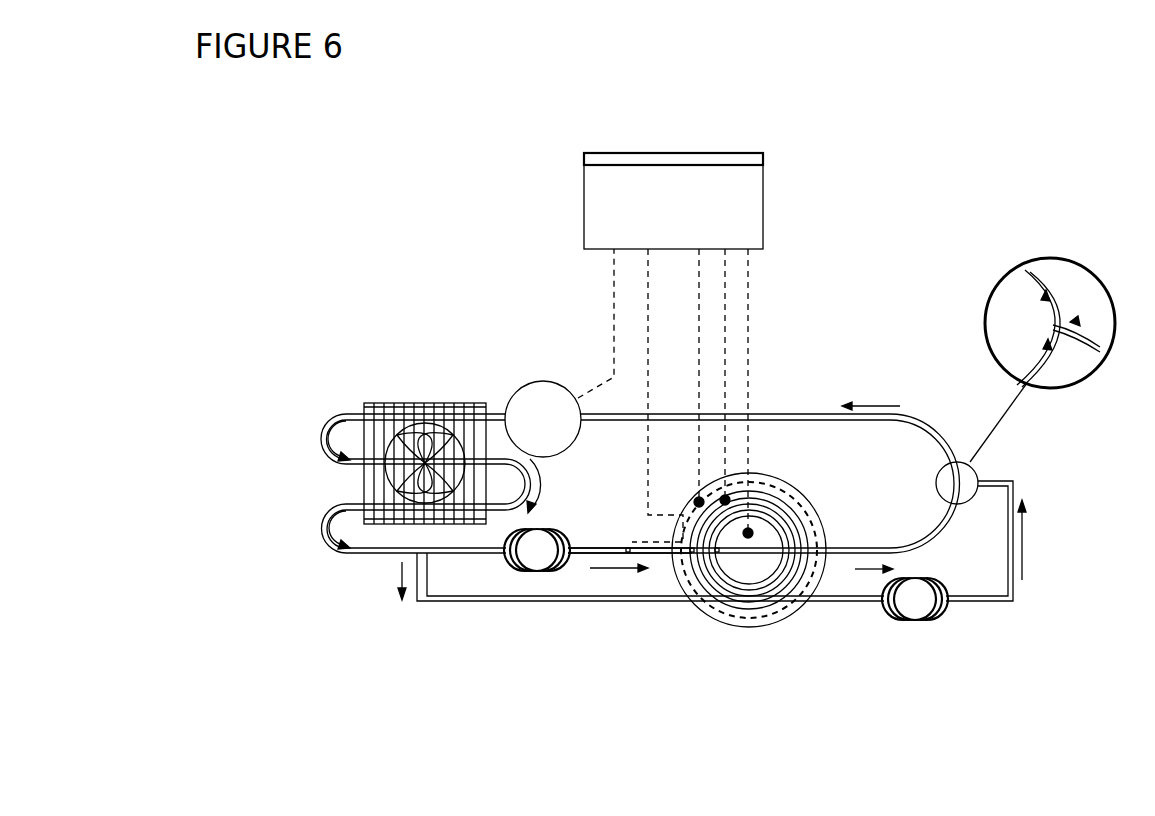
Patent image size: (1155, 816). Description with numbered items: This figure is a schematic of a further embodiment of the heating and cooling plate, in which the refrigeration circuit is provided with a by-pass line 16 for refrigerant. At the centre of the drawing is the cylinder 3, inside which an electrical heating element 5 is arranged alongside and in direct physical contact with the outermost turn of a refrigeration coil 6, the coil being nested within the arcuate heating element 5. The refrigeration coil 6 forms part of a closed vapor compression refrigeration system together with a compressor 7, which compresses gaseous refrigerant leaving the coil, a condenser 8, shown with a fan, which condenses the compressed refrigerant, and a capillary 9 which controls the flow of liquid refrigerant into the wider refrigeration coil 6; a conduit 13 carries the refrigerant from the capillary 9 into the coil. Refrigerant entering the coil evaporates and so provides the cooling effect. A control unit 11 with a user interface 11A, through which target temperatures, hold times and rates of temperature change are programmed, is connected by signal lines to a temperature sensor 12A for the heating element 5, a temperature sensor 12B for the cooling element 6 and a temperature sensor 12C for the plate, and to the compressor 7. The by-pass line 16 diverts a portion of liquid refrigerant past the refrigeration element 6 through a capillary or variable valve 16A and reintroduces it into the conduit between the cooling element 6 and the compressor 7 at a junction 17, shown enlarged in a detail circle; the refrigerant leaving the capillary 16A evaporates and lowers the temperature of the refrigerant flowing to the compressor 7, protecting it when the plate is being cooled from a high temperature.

The cylinder 3 is at (802, 600).
The electrical heating element 5 is at (708, 603).
The refrigeration coil 6 is at (698, 570).
The compressor 7 is at (559, 353).
The condenser 8 is at (364, 403).
The capillary 9 is at (507, 560).
The control unit 11 is at (673, 207).
The user interface 11A is at (636, 150).
The temperature sensor 12A is at (700, 263).
The temperature sensor 12B is at (727, 318).
The temperature sensor 12C is at (755, 372).
The supply pipe 13 is at (640, 553).
The by-pass line 16 is at (420, 563).
The capillary or variable valve 16A is at (935, 620).
The pipe junction 17 is at (1049, 313).